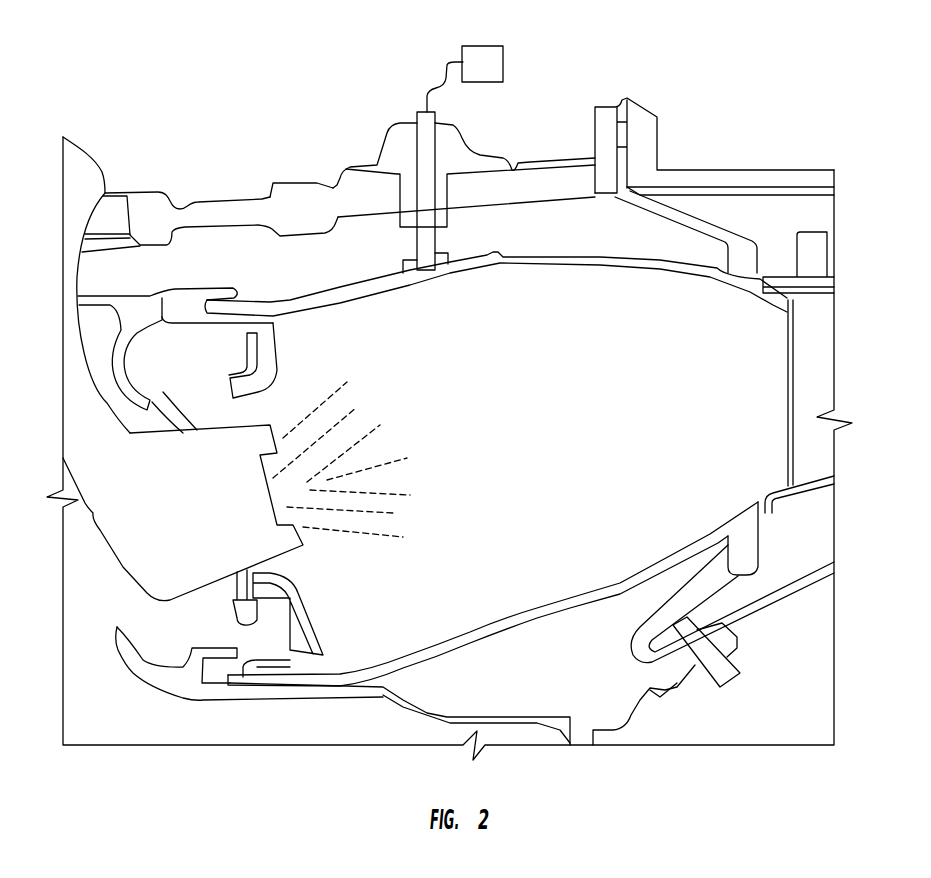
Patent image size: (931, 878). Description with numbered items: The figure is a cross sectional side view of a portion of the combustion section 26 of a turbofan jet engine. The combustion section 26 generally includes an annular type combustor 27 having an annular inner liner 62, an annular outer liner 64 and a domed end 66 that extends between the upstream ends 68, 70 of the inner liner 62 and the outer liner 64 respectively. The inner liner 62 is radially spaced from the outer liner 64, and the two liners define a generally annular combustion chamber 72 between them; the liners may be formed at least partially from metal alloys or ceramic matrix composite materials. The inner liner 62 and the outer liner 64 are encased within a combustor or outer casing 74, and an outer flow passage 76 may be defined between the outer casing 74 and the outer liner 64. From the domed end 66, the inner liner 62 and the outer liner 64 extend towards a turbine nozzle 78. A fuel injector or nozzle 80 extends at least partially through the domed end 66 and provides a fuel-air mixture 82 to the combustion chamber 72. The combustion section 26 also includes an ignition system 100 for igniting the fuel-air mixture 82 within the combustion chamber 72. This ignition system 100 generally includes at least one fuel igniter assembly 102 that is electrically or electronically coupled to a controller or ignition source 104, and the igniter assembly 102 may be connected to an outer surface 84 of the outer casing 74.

The combustion section 26 is at (652, 74).
The annular type combustor 27 is at (308, 268).
The inner liner 62 is at (502, 647).
The outer liner 64 is at (568, 257).
The domed end 66 is at (137, 676).
The upstream end of the inner liner 68 is at (280, 706).
The upstream end of the outer liner 70 is at (273, 299).
The combustion chamber 72 is at (558, 456).
The outer casing 74 is at (180, 203).
The outer flow passage 76 is at (551, 234).
The turbine nozzle 78 is at (805, 496).
The fuel nozzle 80 is at (203, 508).
The fuel-air mixture 82 is at (368, 536).
The outer surface of the outer casing 84 is at (516, 168).
The ignition system 100 is at (406, 71).
The fuel igniter assembly 102 is at (471, 138).
The controller 104 is at (498, 77).